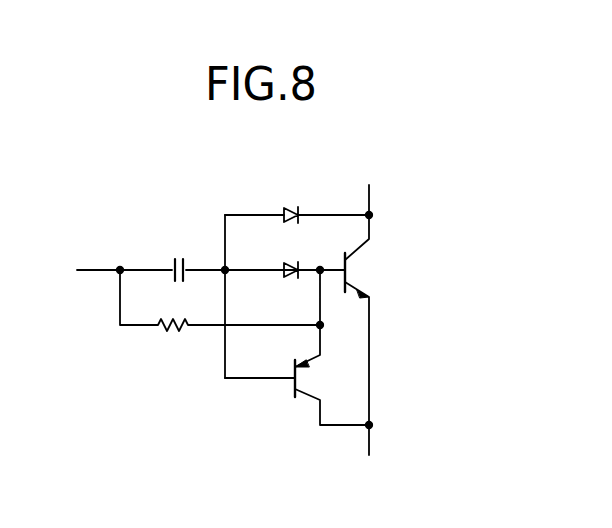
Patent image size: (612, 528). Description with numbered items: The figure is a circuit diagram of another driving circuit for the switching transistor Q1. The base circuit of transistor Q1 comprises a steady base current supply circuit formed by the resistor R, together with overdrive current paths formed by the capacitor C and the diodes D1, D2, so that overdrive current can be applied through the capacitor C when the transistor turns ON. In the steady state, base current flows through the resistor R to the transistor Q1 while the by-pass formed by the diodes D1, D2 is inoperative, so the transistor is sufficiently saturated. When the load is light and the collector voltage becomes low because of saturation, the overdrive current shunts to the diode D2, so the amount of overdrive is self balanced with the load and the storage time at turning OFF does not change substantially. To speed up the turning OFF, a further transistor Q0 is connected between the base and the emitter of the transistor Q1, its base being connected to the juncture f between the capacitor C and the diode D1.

The capacitor C is at (177, 258).
The juncture f is at (219, 263).
The resistor R is at (220, 313).
The diode D1 is at (287, 260).
The diode D2 is at (297, 204).
The transistor Q1 is at (375, 335).
The transistor Q0 is at (297, 375).